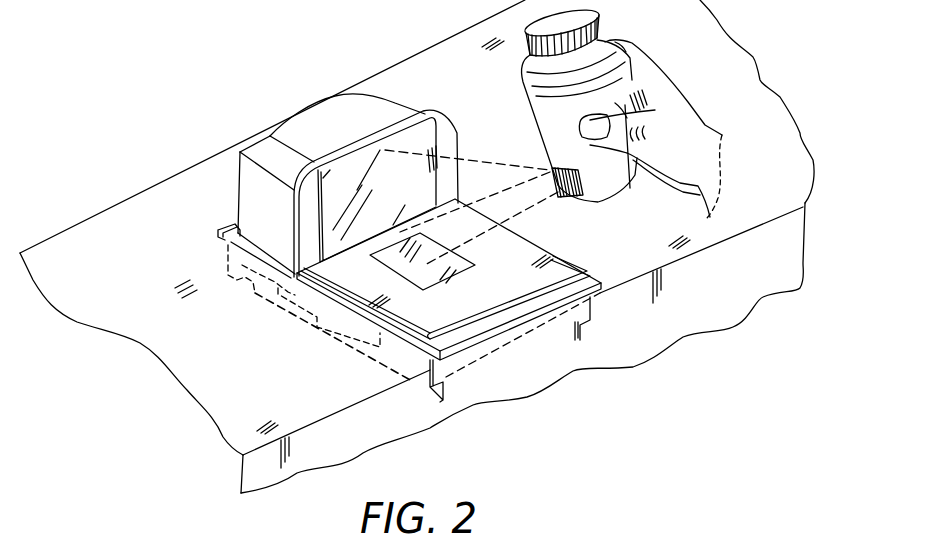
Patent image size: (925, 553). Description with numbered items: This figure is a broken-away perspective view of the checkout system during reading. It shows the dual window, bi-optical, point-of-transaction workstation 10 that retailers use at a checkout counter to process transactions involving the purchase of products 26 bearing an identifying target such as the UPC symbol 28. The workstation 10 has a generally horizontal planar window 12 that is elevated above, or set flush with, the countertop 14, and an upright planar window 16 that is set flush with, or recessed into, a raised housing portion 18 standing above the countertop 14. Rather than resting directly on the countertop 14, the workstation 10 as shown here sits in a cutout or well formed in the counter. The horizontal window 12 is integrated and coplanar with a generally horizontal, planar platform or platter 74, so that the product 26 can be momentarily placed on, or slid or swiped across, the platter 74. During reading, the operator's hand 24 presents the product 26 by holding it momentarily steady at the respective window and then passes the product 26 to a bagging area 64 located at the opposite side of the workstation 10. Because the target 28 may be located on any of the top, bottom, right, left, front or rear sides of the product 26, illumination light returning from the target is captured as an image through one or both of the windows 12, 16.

The point-of-transaction workstation 10 is at (409, 210).
The horizontal planar window 12 is at (433, 278).
The countertop 14 is at (618, 277).
The upright planar window 16 is at (362, 152).
The raised housing portion 18 is at (447, 137).
The operator hand 24 is at (702, 128).
The product 26 is at (609, 120).
The UPC symbol 28 is at (610, 188).
The bagging area 64 is at (182, 350).
The platter 74 is at (338, 279).